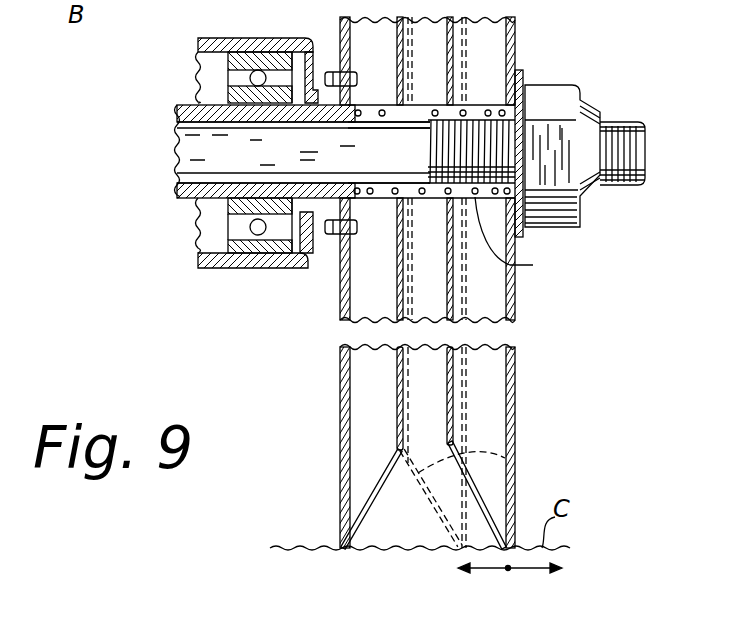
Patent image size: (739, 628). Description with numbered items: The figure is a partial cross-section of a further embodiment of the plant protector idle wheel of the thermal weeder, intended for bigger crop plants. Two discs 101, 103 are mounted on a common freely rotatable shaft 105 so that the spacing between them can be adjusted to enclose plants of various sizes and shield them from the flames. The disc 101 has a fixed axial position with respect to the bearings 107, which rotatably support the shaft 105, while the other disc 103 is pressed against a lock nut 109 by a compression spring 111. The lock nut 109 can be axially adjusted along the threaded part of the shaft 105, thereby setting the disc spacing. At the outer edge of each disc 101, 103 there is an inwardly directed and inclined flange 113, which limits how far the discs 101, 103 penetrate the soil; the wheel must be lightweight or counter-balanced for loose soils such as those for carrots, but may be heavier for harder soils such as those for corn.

The disc 101 is at (342, 357).
The disc 103 is at (512, 405).
The shaft 105 is at (205, 148).
The bearings 107 is at (238, 62).
The lock nut 109 is at (555, 98).
The compression spring 111 is at (529, 235).
The flange 113 is at (377, 490).